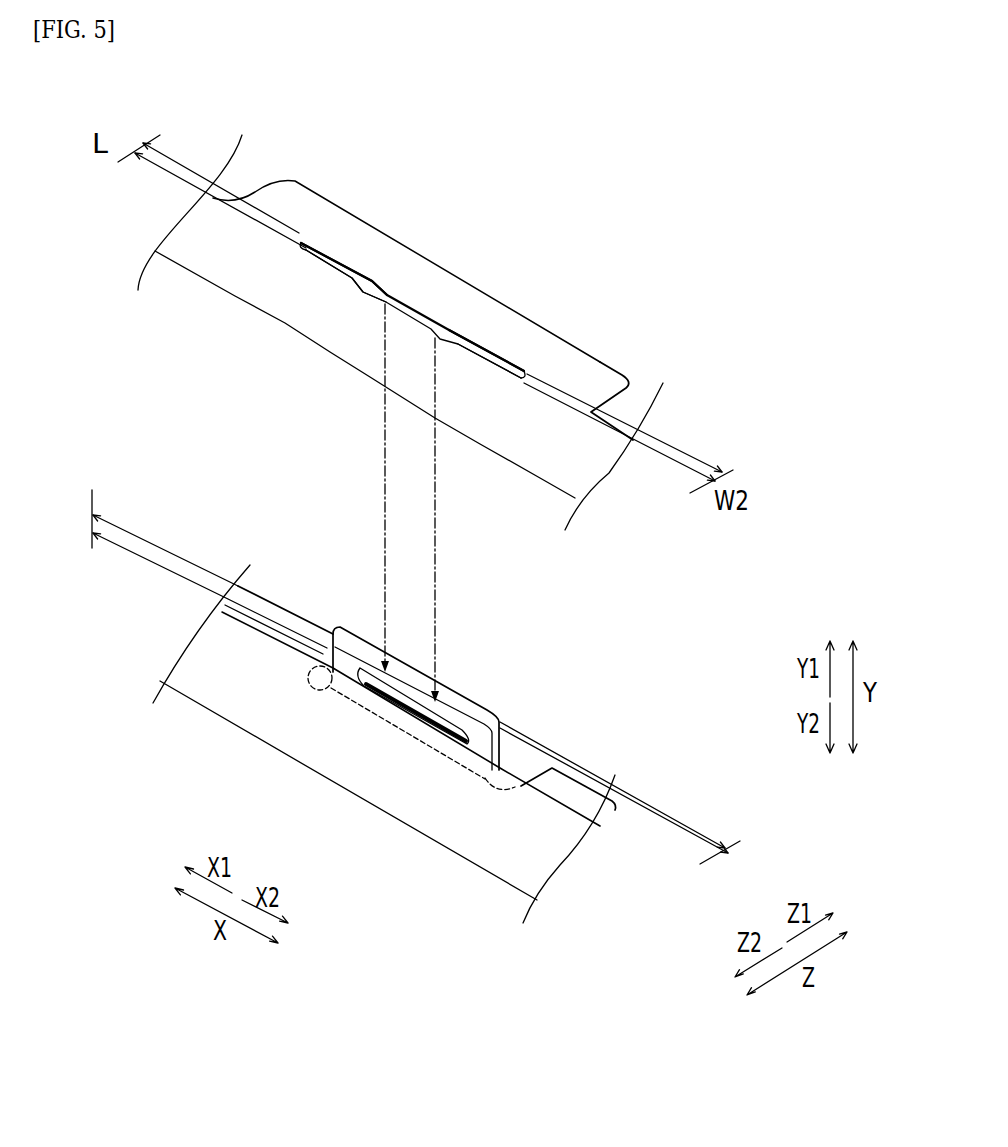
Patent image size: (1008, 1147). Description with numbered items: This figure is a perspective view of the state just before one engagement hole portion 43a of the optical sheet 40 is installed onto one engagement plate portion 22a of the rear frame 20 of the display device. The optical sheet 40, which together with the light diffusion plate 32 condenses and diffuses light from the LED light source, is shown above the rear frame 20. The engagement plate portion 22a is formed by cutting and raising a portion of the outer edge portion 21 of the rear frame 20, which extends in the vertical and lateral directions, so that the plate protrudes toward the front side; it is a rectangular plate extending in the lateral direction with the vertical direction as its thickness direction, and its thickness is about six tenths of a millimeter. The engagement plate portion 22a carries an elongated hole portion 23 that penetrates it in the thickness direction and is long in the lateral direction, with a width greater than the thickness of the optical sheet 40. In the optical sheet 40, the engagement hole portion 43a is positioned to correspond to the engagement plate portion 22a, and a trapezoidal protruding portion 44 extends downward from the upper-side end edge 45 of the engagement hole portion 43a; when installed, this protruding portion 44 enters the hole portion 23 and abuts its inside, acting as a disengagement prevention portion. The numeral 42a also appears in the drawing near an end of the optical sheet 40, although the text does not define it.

The rear frame 20 is at (278, 614).
The outer edge portion 21 is at (603, 808).
The engagement plate portion 22a is at (483, 733).
The hole portion 23 is at (400, 718).
The light diffusion plate 32 is at (217, 692).
The optical sheet 40 is at (213, 258).
The stepped end portion 42a is at (609, 384).
The engagement hole portion 43a is at (510, 355).
The protruding portion 44 is at (408, 300).
The end edge 45 is at (340, 260).